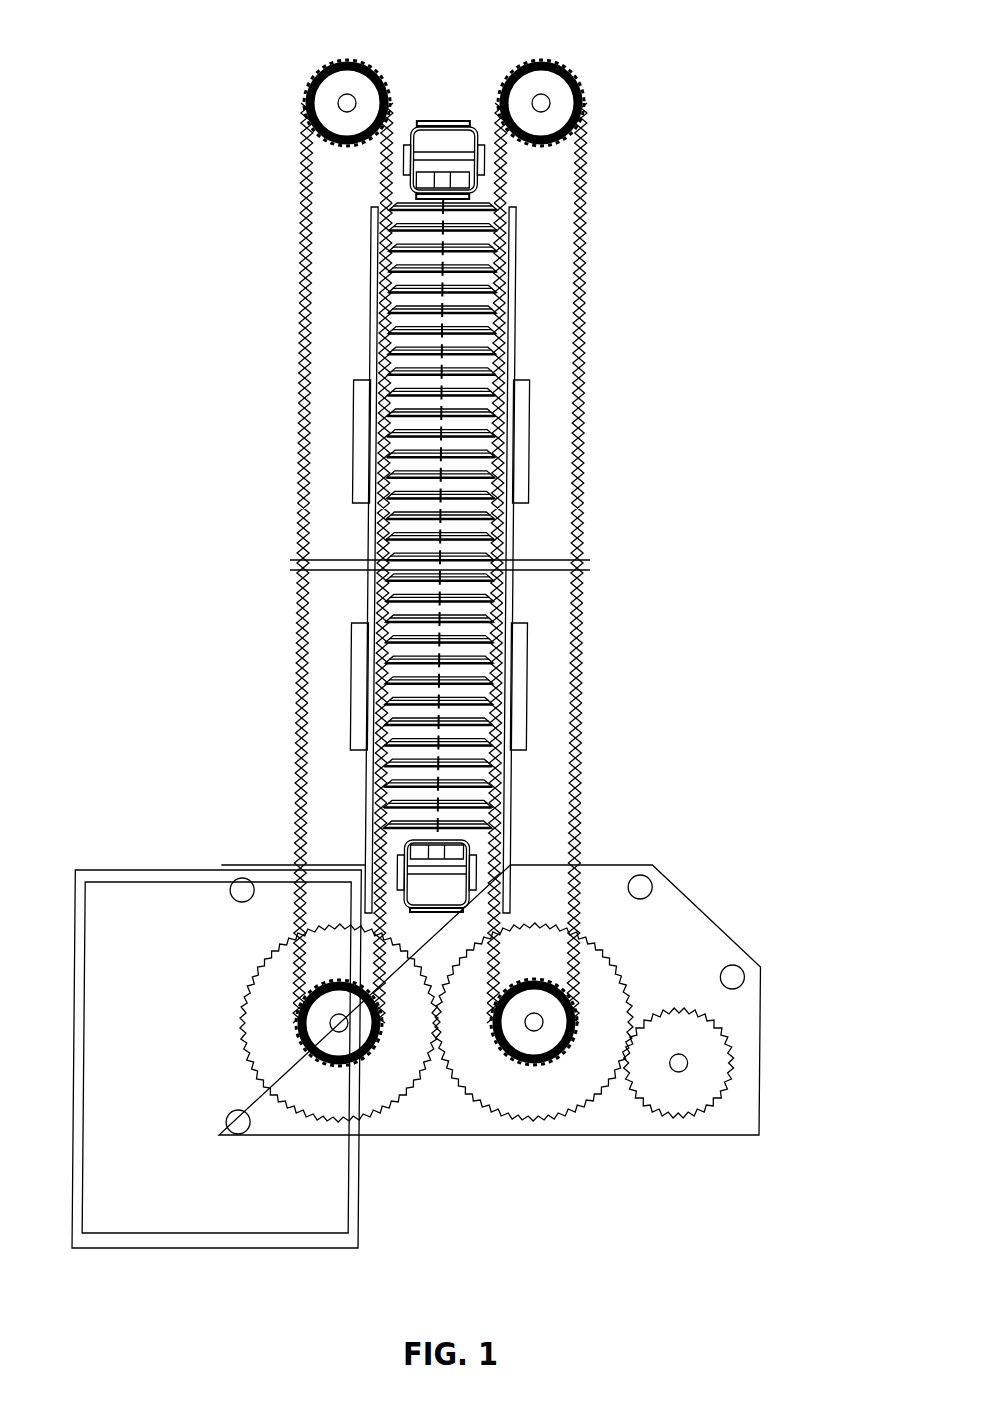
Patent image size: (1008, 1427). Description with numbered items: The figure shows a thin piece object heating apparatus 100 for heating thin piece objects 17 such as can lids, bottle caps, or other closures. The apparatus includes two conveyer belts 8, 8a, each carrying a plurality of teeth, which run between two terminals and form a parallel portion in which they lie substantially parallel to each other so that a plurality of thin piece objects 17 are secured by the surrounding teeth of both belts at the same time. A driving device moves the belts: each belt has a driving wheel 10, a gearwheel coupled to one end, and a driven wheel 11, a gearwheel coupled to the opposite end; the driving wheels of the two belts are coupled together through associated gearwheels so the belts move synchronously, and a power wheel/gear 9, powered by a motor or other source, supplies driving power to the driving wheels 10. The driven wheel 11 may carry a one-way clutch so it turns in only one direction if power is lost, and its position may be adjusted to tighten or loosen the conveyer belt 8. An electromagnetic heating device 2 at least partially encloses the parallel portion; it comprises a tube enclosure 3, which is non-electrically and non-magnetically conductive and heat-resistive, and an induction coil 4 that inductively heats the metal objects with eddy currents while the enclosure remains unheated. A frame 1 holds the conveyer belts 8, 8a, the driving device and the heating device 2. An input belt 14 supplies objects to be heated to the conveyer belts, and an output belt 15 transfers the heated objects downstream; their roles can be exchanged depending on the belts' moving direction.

The thin piece object heating apparatus 100 is at (172, 80).
The frame 1 is at (668, 928).
The electromagnetic heating device 2 is at (554, 653).
The tube enclosure 3 is at (510, 285).
The induction coil 4 is at (527, 442).
The conveyer belt 8 is at (303, 703).
The conveyer belt 8a is at (582, 507).
The power wheel/gear 9 is at (705, 1043).
The driving wheel 10 is at (277, 1007).
The driven wheel 11 is at (335, 125).
The input belt 14 is at (443, 865).
The output belt 15 is at (430, 162).
The thin piece object 17 is at (398, 530).